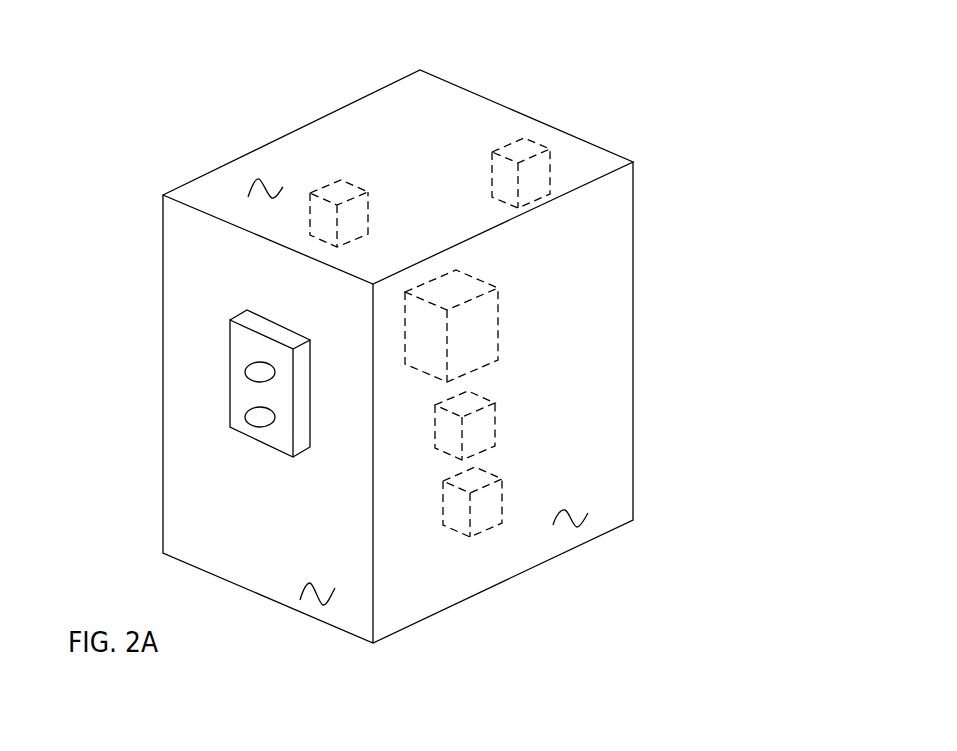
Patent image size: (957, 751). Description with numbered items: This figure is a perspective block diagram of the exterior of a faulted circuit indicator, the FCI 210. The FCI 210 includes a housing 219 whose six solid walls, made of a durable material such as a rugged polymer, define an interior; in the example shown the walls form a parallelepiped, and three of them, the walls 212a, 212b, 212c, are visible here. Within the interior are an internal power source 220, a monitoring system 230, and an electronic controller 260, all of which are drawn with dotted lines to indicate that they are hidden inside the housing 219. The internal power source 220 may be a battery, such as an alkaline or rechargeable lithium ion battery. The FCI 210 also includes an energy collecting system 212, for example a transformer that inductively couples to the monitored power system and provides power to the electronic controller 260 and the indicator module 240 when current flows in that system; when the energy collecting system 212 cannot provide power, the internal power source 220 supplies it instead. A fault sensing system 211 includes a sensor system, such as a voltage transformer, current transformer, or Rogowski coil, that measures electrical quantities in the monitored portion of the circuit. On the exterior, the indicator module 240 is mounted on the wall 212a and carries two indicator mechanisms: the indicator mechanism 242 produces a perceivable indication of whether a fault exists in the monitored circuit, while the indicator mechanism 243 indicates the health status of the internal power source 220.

The FCI 210 is at (618, 92).
The fault sensing system 211 is at (542, 176).
The energy collecting system 212 is at (360, 215).
The wall 212a is at (310, 584).
The wall 212b is at (565, 511).
The wall 212c is at (268, 180).
The housing 219 is at (658, 300).
The internal power source 220 is at (487, 423).
The monitoring system 230 is at (462, 322).
The indicator module 240 is at (199, 411).
The indicator mechanism 242 is at (262, 368).
The indicator mechanism 243 is at (261, 423).
The electronic controller 260 is at (493, 505).